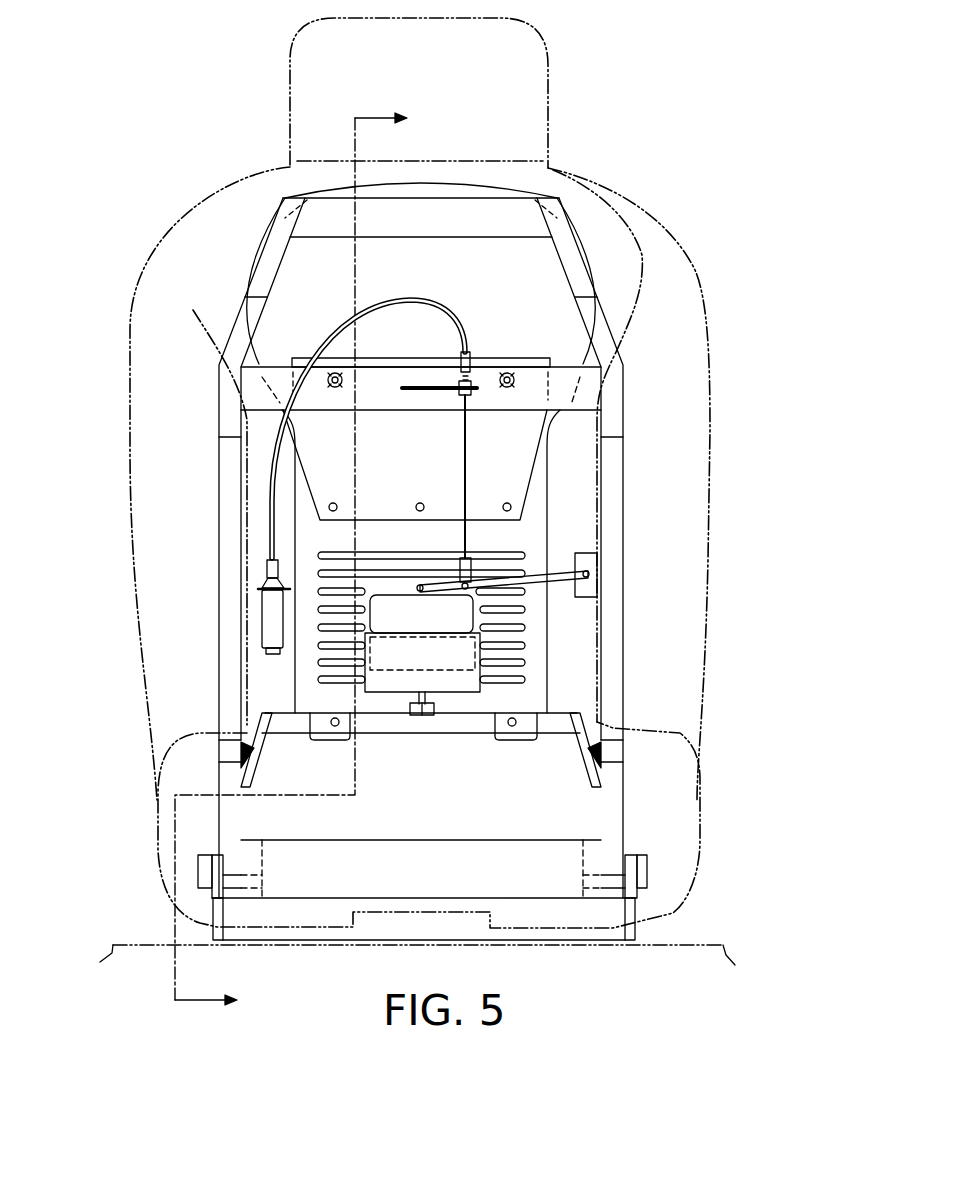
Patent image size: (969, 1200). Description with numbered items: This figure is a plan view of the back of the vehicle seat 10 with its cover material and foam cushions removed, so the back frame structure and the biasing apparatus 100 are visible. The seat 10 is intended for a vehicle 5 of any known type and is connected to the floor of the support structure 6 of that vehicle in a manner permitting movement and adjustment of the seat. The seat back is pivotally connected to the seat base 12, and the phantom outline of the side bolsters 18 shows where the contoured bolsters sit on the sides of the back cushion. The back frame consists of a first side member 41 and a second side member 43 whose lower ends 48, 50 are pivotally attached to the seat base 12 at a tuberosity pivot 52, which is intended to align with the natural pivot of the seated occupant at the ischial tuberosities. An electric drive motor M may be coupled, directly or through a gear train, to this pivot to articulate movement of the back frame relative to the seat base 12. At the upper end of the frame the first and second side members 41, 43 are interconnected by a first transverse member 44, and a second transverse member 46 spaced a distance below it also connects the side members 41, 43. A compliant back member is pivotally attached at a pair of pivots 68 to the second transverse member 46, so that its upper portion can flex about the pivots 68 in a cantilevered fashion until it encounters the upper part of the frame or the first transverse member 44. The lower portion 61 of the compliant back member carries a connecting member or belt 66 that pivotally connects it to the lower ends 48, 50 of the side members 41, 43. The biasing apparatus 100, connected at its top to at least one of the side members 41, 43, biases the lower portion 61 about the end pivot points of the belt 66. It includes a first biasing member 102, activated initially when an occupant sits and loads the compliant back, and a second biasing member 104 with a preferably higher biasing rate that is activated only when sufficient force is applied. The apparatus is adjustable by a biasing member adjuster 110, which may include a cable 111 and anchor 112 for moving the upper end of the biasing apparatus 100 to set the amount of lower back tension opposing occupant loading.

The vehicle 5 is at (726, 937).
The support structure 6 is at (138, 940).
The vehicle seat 10 is at (180, 147).
The seat base 12 is at (600, 910).
The side bolsters 18 is at (677, 602).
The first side member 41 is at (617, 493).
The second side member 43 is at (228, 460).
The first transverse member 44 is at (497, 217).
The second transverse member 46 is at (583, 387).
The lower end of first side member 48 is at (645, 827).
The lower end of second side member 50 is at (186, 840).
The tuberosity pivot 52 is at (198, 877).
The lower portion of compliant back member 61 is at (422, 745).
The connecting member or belt 66 is at (467, 722).
The pivots 68 is at (338, 388).
The biasing apparatus 100 is at (508, 633).
The first biasing member 102 is at (550, 636).
The second biasing member 104 is at (352, 628).
The biasing member adjuster 110 is at (527, 533).
The cable 111 is at (447, 300).
The anchor 112 is at (457, 403).
The electric drive motor M is at (267, 622).